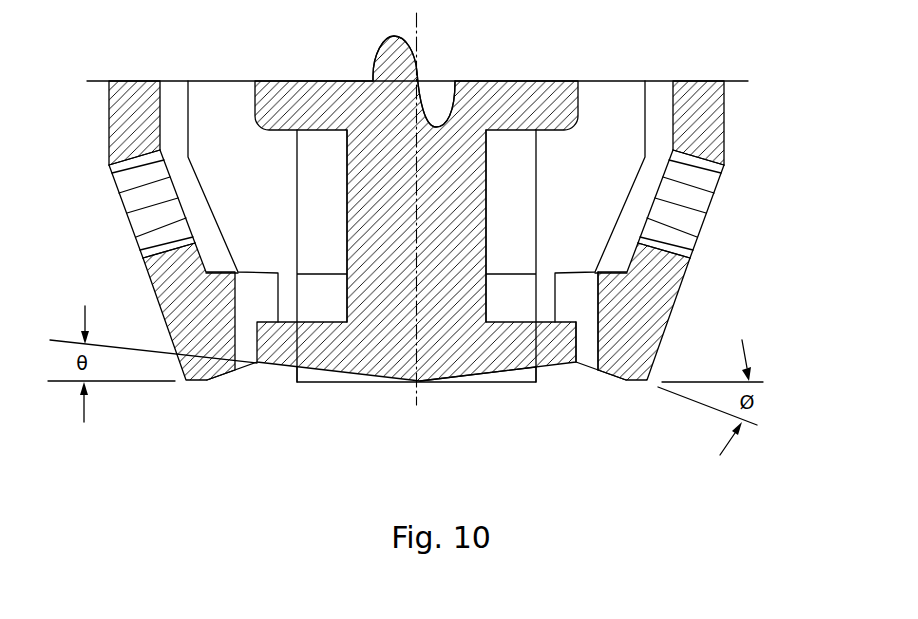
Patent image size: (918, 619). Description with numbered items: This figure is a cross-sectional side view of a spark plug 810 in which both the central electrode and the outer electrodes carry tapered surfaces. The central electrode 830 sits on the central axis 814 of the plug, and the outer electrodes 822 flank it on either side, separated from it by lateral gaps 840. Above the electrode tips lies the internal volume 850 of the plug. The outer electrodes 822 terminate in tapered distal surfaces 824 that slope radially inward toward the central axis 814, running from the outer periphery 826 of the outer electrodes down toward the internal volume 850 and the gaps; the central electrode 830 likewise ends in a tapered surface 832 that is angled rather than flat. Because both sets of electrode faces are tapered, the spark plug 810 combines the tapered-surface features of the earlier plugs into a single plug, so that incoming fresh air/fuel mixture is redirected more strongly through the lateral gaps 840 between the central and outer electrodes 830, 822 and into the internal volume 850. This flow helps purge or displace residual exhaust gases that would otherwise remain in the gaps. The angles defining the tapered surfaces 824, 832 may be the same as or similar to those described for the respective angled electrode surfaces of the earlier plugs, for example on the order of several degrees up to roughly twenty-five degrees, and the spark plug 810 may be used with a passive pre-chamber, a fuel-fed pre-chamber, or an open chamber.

The spark plug 810 is at (264, 419).
The central axis 814 is at (417, 45).
The outer electrodes 822 is at (426, 230).
The tapered distal surfaces of outer electrodes 824 is at (212, 377).
The outer periphery 826 is at (683, 287).
The central electrode 830 is at (365, 389).
The tapered surface of central electrode 832 is at (545, 370).
The lateral gaps 840 is at (587, 343).
The internal volume 850 is at (249, 212).